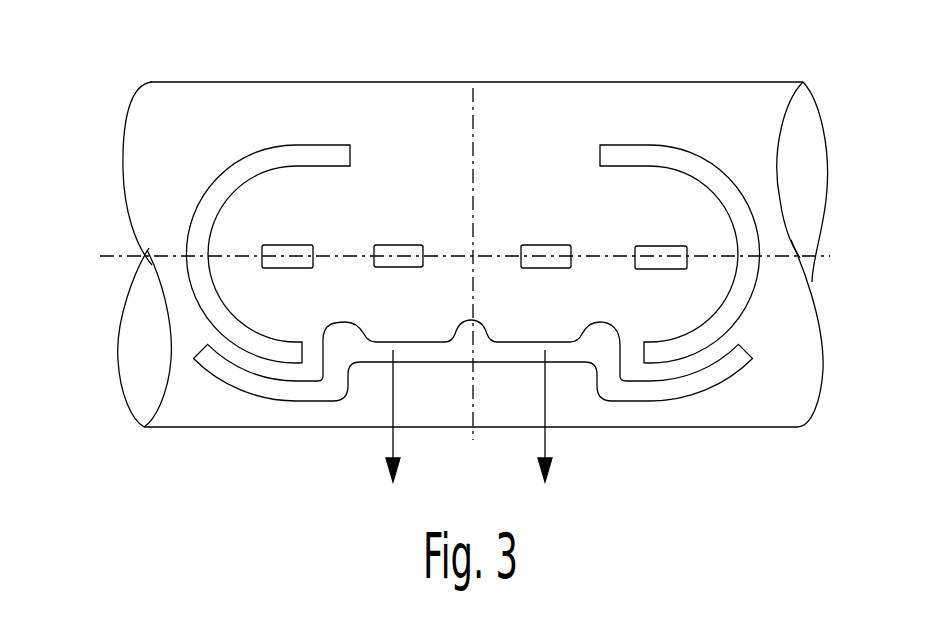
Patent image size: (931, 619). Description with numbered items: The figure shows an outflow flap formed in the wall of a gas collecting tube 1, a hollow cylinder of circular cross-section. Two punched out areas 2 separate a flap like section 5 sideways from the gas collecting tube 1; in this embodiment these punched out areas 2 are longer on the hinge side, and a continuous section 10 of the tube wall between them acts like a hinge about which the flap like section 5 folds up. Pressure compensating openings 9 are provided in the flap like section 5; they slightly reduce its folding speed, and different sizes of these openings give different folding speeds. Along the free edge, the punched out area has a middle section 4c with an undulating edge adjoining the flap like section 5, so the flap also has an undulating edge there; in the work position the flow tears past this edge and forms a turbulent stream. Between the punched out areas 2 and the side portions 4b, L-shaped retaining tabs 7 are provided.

The gas collecting tube 1 is at (770, 113).
The punched out areas 2 is at (307, 143).
The flap like section 5 is at (694, 212).
The pressure compensating openings 9 is at (546, 256).
The continuous section 10 is at (433, 162).
The L-shaped retaining tabs 7 is at (228, 353).
The punched out area side portions 4b is at (265, 387).
The middle section of punched out area 4c is at (553, 368).